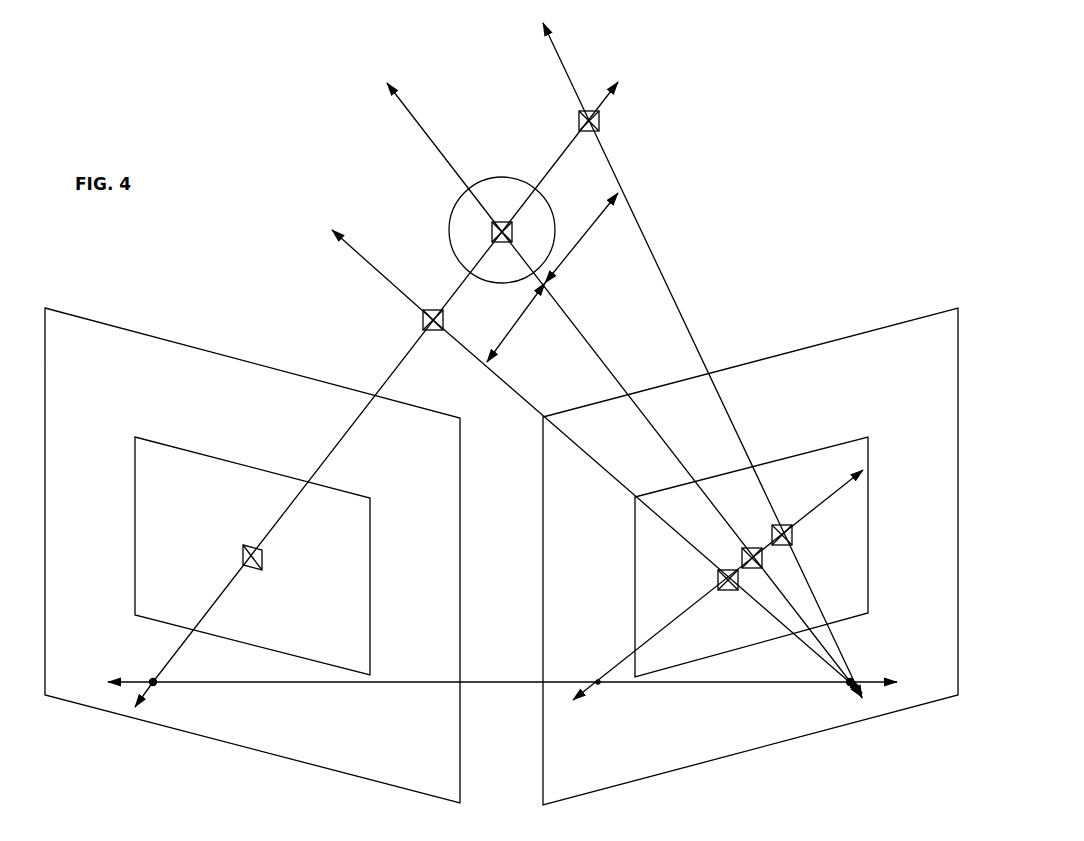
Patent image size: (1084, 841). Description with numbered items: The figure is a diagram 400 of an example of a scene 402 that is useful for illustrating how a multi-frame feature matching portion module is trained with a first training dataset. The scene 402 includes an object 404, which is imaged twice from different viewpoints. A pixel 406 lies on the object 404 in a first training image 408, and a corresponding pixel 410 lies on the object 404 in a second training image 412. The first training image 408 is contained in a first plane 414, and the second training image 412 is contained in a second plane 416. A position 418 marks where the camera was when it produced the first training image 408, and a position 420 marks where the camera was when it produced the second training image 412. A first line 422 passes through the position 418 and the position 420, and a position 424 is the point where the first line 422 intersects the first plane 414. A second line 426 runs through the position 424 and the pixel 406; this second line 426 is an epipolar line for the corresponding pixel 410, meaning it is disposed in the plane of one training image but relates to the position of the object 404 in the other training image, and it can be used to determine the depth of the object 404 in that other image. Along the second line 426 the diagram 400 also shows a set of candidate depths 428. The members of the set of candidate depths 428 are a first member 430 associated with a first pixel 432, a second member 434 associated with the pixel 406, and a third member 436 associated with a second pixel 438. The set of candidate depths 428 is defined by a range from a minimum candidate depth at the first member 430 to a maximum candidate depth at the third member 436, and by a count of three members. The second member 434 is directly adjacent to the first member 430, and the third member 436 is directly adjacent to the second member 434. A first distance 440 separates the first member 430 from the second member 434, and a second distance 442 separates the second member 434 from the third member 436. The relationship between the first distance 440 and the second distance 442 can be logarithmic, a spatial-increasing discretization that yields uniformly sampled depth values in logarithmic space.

The diagram 400 is at (892, 129).
The scene 402 is at (465, 95).
The object 404 is at (504, 176).
The pixel 406 is at (750, 548).
The first training image 408 is at (868, 606).
The corresponding pixel 410 is at (246, 548).
The second training image 412 is at (134, 552).
The first plane 414 is at (930, 702).
The second plane 416 is at (80, 700).
The position of camera at production of first training image 418 is at (845, 690).
The position of camera at production of second training image 420 is at (158, 690).
The first line 422 is at (483, 684).
The position 424 is at (598, 686).
The second line 426 is at (848, 470).
The set of candidate depths 428 is at (493, 220).
The first member 430 is at (422, 322).
The first pixel 432 is at (718, 580).
The second member 434 is at (490, 238).
The third member 436 is at (600, 125).
The second pixel 438 is at (792, 535).
The first distance 440 is at (518, 330).
The second distance 442 is at (577, 255).